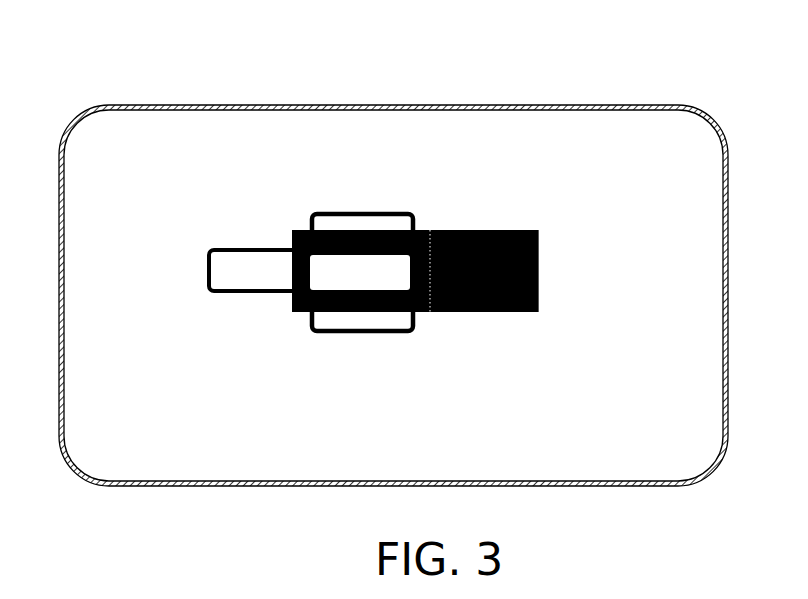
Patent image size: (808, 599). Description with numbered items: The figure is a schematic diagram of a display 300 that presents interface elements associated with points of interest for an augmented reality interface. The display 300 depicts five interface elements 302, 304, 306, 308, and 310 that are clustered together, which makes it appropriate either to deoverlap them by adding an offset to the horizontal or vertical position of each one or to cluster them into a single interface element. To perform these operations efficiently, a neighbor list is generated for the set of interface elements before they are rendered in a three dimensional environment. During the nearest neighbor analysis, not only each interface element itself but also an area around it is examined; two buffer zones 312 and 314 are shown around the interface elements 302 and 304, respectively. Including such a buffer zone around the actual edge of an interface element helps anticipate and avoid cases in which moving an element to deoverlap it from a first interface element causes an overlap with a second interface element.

The display 300 is at (766, 46).
The interface element 302 is at (538, 246).
The interface element 304 is at (469, 283).
The interface element 306 is at (401, 209).
The interface element 308 is at (391, 340).
The interface element 310 is at (215, 252).
The buffer zone 312 is at (579, 254).
The buffer zone 314 is at (322, 252).